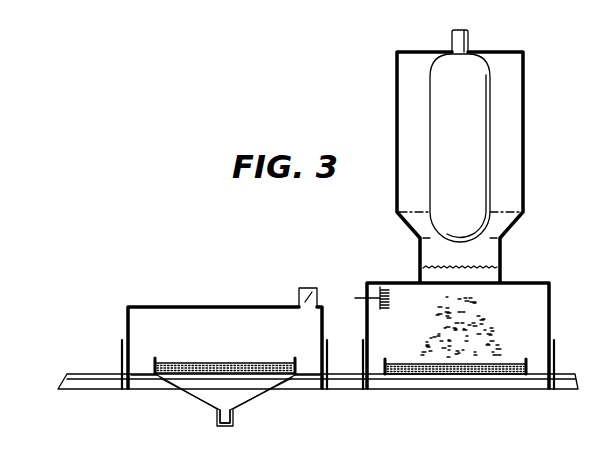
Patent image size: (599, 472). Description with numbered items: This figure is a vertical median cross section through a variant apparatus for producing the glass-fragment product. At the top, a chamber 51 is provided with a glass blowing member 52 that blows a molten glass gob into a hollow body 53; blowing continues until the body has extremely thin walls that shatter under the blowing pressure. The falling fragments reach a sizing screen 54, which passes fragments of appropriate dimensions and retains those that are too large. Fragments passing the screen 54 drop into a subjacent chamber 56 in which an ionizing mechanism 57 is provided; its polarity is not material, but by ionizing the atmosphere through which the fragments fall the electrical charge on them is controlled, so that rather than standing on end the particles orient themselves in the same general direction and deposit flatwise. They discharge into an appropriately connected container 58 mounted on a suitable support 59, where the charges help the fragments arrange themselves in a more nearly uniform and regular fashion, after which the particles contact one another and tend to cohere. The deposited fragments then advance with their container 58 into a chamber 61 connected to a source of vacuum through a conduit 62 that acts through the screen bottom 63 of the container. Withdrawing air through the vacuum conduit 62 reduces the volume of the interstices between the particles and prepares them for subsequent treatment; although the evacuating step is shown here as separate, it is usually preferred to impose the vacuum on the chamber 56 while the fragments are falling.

The chamber 51 is at (515, 134).
The glass blowing member 52 is at (469, 43).
The hollow body 53 is at (492, 102).
The sizing screen 54 is at (492, 273).
The subjacent chamber 56 is at (518, 317).
The ionizing mechanism 57 is at (381, 289).
The container 58 is at (530, 369).
The support 59 is at (473, 385).
The chamber 61 is at (244, 346).
The vacuum conduit 62 is at (236, 416).
The screen bottom 63 is at (197, 374).